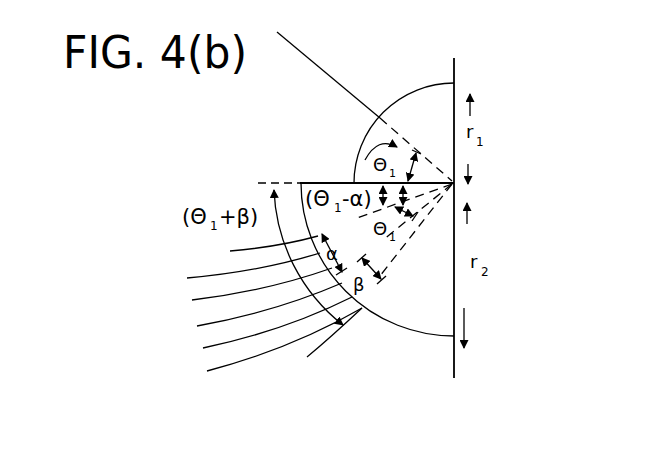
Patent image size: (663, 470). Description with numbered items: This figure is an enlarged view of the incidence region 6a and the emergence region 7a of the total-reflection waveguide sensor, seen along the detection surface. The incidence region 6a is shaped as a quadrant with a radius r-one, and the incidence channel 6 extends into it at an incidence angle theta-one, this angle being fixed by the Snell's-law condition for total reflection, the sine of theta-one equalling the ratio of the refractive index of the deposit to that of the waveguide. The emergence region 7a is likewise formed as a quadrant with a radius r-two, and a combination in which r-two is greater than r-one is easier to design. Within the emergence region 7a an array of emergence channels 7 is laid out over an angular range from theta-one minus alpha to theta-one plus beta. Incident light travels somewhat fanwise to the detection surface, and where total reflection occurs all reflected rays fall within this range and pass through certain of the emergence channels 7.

The incidence channel 6 is at (332, 72).
The incidence region 6a is at (437, 128).
The emergence channels 7 is at (250, 345).
The emergence region 7a is at (438, 240).